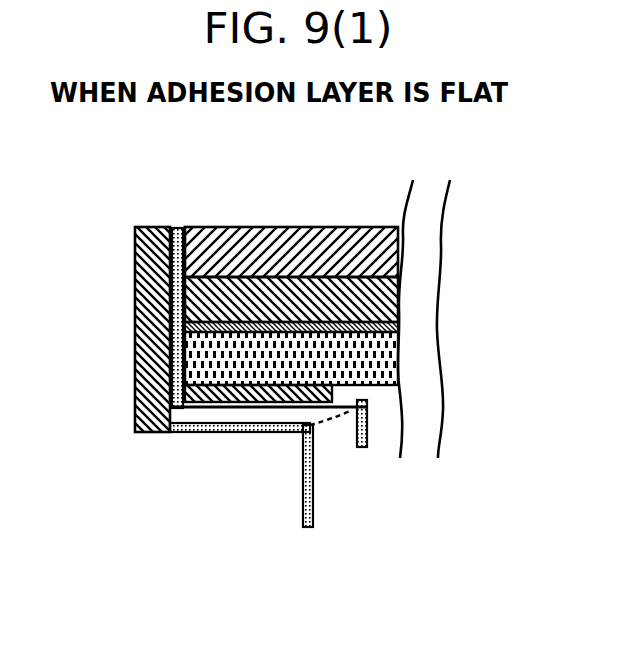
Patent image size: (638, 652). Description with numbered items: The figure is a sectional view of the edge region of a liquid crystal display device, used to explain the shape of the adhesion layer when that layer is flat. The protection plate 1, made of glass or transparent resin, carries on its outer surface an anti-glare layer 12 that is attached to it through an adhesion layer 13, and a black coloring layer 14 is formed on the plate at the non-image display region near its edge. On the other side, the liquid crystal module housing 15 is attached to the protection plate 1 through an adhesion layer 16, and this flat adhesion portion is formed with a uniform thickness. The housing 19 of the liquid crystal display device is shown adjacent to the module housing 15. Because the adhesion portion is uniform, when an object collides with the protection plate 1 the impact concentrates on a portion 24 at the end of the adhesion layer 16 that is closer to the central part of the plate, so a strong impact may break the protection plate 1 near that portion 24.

The protection plate 1 is at (137, 355).
The anti-glare layer 12 is at (352, 255).
The adhesion layer 13 is at (308, 300).
The black coloring layer 14 is at (252, 333).
The liquid crystal module housing 15 is at (290, 410).
The adhesion layer 16 is at (198, 410).
The housing of the liquid crystal display device 19 is at (303, 497).
The portion 24 is at (245, 408).